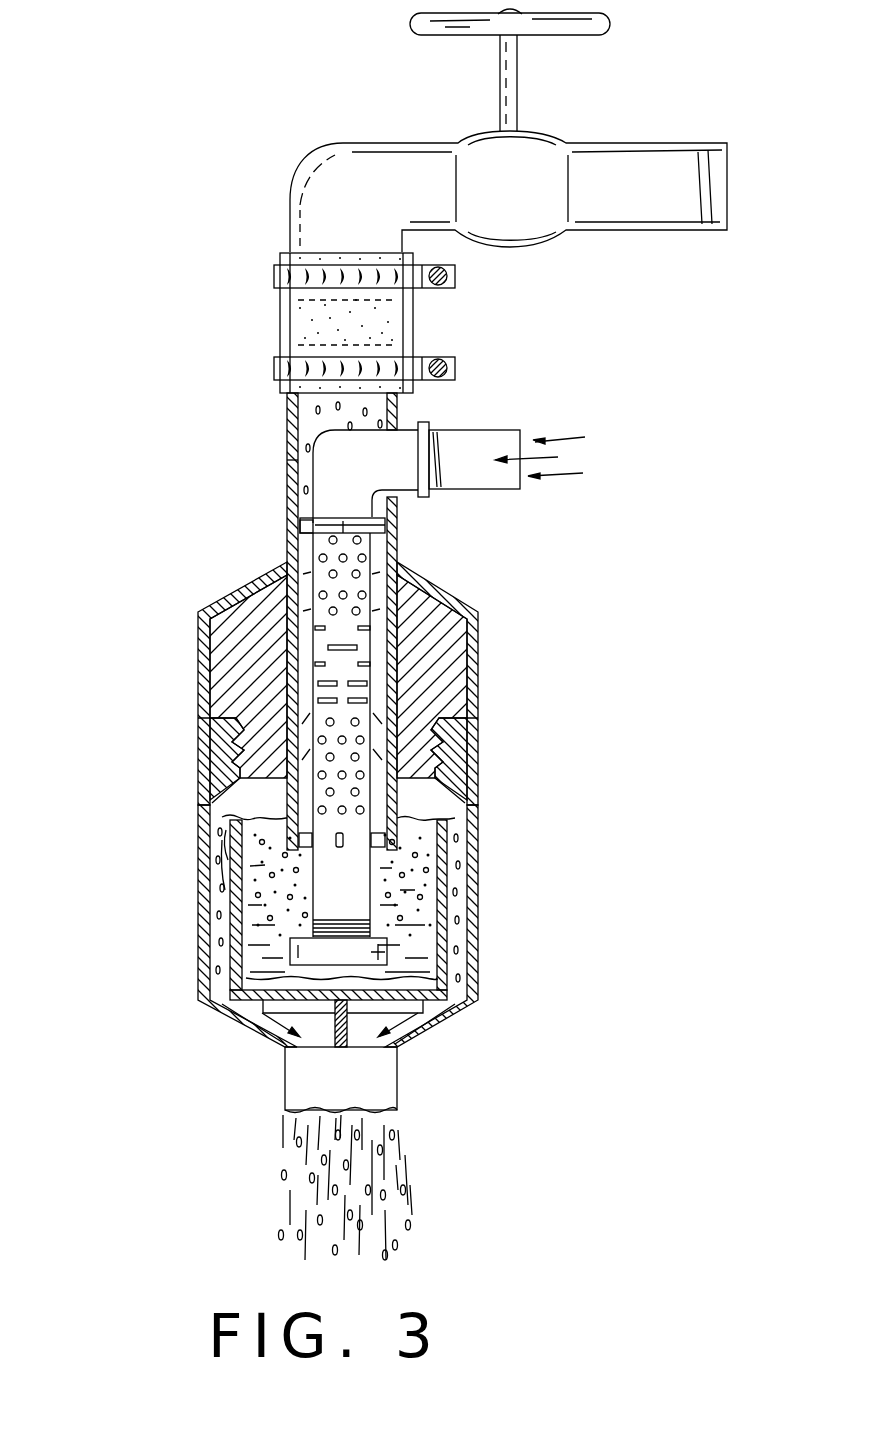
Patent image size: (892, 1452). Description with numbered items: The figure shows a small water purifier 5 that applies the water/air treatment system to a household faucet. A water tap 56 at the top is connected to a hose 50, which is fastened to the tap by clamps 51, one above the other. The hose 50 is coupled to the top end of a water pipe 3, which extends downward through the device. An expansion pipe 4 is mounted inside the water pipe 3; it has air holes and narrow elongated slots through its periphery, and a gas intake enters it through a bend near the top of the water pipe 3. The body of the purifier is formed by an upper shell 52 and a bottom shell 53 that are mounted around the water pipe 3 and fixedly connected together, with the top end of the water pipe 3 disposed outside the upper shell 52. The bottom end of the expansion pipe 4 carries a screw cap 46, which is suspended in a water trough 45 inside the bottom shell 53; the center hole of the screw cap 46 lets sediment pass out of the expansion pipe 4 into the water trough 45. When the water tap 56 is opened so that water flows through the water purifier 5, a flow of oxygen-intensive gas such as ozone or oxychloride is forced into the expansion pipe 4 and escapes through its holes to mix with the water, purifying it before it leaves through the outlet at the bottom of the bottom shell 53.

The water pipe 3 is at (287, 530).
The expansion pipe 4 is at (365, 565).
The water purifier 5 is at (172, 503).
The water trough 45 is at (452, 877).
The screw cap 46 is at (360, 955).
The hose 50 is at (290, 333).
The clamps 51 is at (455, 280).
The upper shell 52 is at (472, 648).
The bottom shell 53 is at (200, 930).
The water tap 56 is at (290, 243).